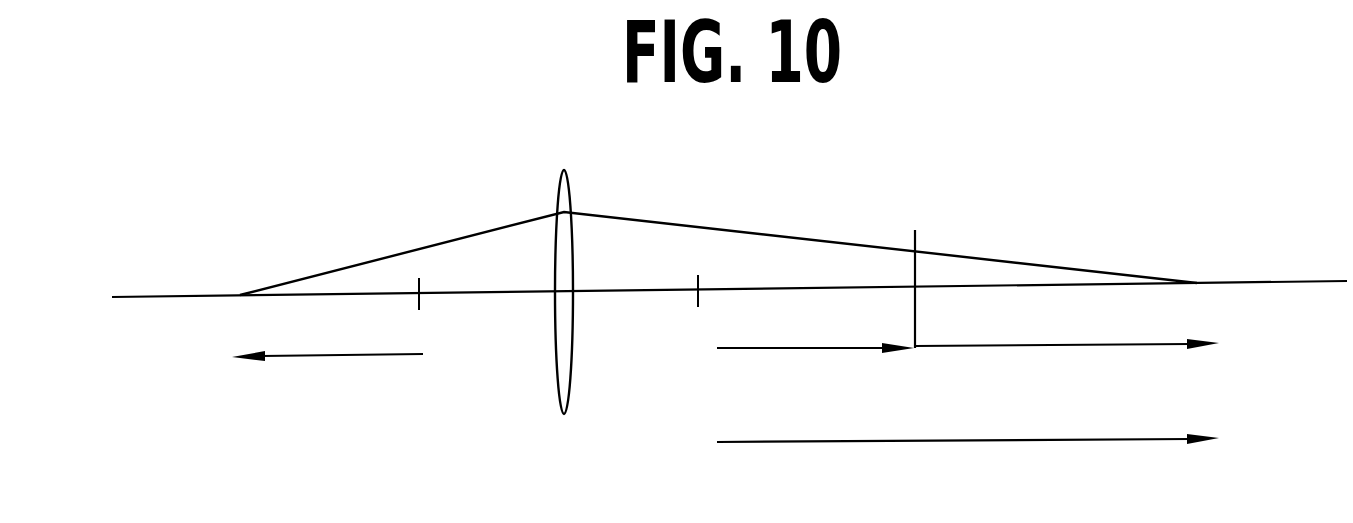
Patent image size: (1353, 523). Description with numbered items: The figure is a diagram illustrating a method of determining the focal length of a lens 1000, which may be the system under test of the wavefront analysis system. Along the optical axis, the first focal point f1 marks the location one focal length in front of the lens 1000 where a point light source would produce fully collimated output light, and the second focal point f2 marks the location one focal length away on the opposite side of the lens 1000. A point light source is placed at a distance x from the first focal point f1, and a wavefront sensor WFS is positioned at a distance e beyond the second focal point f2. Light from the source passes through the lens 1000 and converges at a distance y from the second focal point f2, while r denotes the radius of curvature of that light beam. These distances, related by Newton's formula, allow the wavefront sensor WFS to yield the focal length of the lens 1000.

The lens 1000 is at (573, 172).
The first focal point f1 is at (444, 280).
The second focal point f2 is at (718, 276).
The wavefront sensor WFS is at (915, 264).
The distance between first focal point and point light source x is at (327, 333).
The distance between second focal point and wavefront sensor e is at (815, 326).
The distance between second focal point and beam convergence y is at (1067, 328).
The radius of curvature of light beam r is at (968, 417).